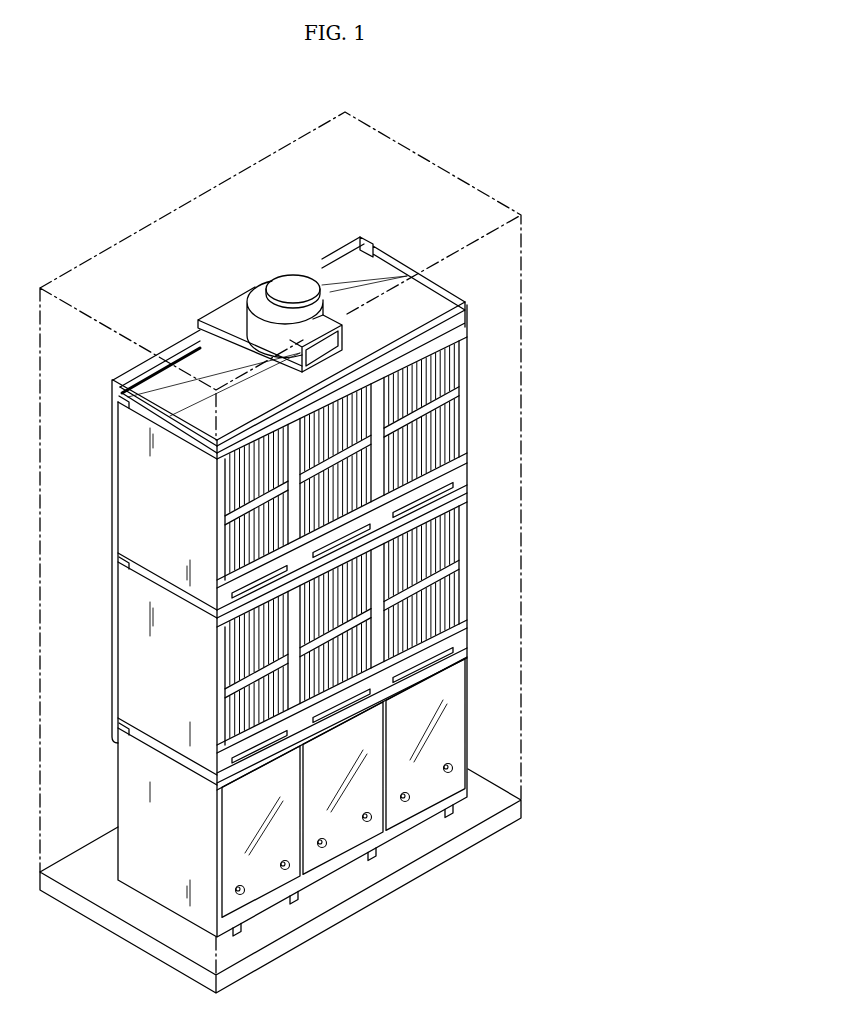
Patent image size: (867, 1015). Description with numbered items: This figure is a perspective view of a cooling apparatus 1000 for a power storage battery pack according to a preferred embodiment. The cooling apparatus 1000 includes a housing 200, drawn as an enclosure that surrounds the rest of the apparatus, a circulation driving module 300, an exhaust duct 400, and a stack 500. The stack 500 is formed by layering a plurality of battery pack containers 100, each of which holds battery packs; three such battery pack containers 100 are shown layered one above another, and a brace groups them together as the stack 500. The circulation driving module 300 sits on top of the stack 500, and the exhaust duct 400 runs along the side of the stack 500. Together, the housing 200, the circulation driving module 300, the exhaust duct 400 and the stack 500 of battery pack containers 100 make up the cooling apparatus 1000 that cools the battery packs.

The cooling apparatus 1000 is at (421, 120).
The housing 200 is at (531, 263).
The circulation driving module 300 is at (262, 288).
The exhaust duct 400 is at (104, 487).
The battery pack container 100 is at (478, 378).
The stack 500 is at (570, 712).